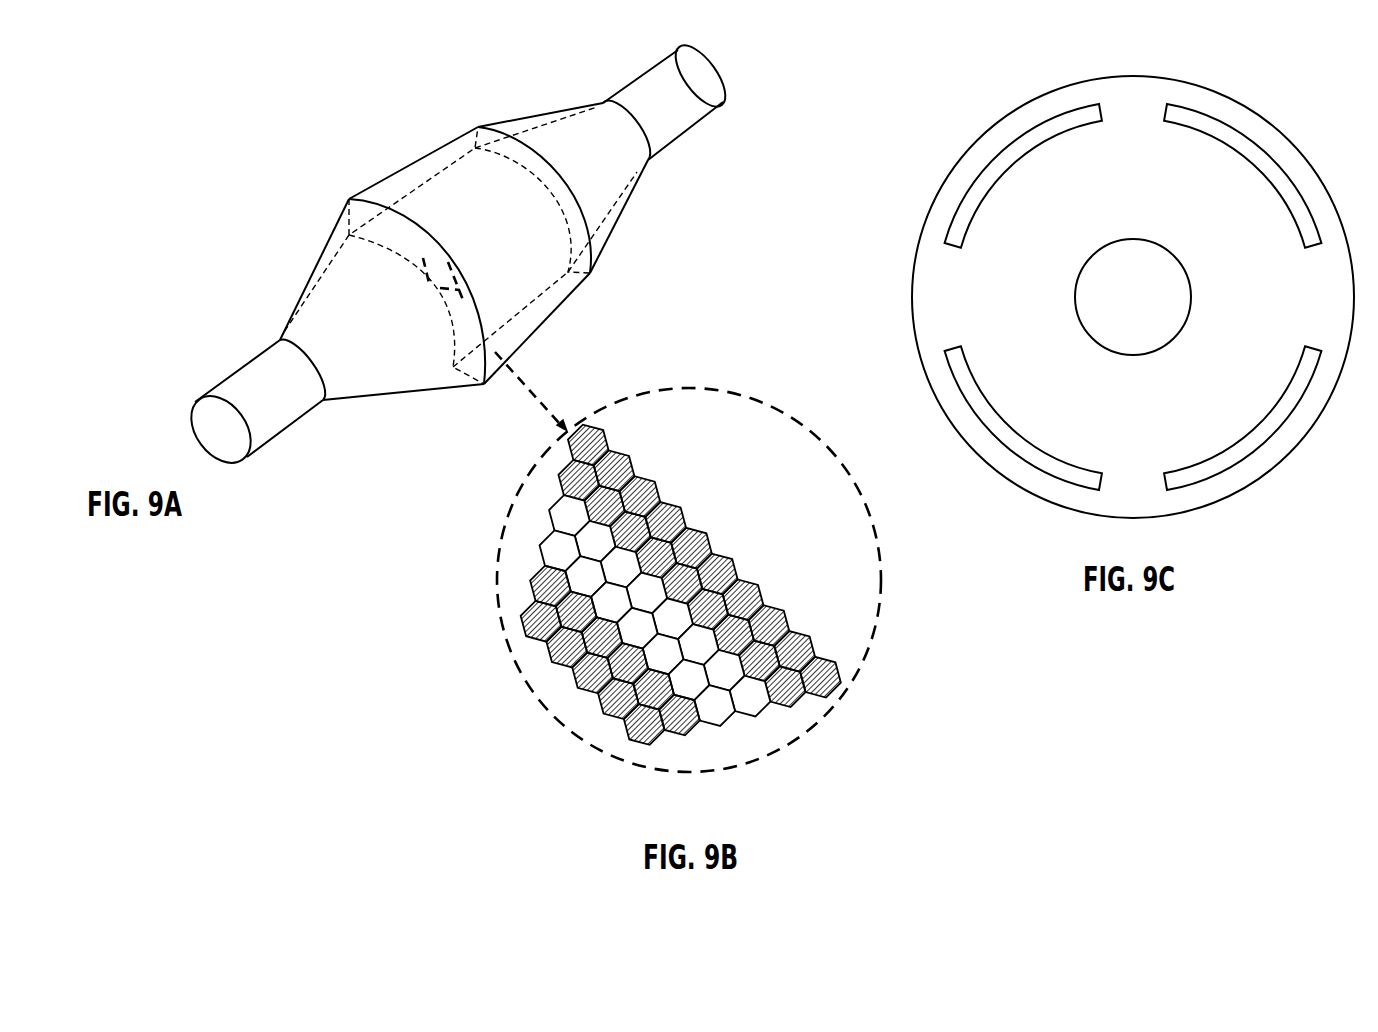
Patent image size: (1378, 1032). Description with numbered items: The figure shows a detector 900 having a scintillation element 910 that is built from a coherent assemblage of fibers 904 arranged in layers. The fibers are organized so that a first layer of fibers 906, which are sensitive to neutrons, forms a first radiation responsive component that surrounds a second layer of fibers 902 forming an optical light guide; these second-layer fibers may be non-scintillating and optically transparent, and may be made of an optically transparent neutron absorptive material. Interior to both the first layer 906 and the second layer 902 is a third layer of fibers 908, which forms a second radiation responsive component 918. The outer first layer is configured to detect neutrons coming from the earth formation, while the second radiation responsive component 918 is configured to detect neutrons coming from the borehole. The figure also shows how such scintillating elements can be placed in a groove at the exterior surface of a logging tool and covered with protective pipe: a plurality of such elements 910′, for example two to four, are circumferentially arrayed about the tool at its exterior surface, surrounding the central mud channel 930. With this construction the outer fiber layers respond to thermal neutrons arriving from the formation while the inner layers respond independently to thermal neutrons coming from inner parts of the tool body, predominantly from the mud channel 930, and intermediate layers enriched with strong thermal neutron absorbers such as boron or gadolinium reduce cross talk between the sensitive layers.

In FIG. 9A, the detector 900 is at (457, 255).
In FIG. 9A, the scintillation element 910 is at (419, 142).
In FIG. 9B, the scintillation element 910 is at (838, 592).
In FIG. 9A, the coherent assemblage of fibers 904 is at (417, 230).
In FIG. 9B, the second layer of fibers 902 is at (538, 506).
In FIG. 9B, the first layer of fibers 906 is at (619, 469).
In FIG. 9B, the third layer of fibers 908 is at (623, 702).
In FIG. 9B, the second radiation responsive component 918 is at (644, 621).
In FIG. 9C, the scintillating elements 910′ is at (1250, 151).
In FIG. 9C, the mud channel 930 is at (1131, 295).